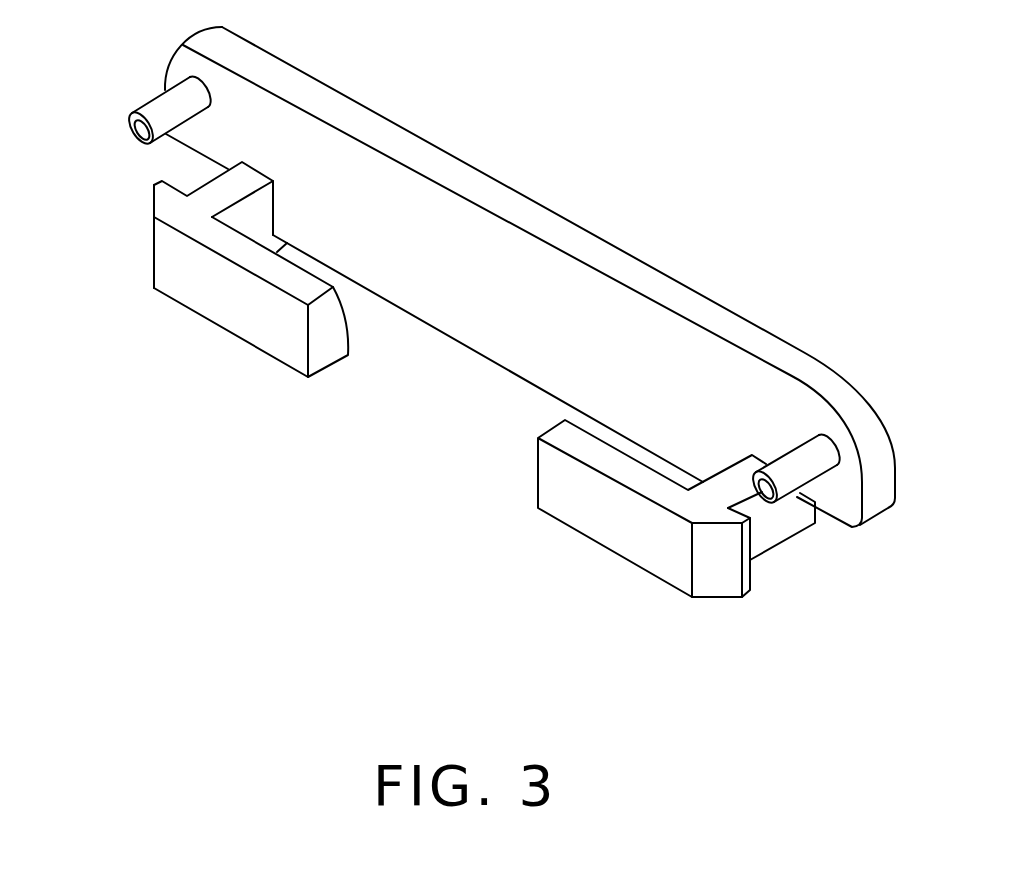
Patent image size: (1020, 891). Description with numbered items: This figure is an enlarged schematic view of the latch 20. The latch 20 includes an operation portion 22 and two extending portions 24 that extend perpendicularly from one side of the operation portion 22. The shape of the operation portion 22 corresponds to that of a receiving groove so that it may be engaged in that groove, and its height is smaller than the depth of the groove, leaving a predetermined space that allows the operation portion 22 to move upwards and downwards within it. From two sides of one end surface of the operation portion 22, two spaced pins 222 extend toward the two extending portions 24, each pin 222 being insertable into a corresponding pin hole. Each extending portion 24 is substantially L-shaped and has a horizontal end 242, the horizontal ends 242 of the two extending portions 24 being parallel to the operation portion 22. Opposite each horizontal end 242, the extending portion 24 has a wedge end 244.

The latch 20 is at (649, 236).
The operation portion 22 is at (260, 117).
The pin 222 is at (182, 102).
The extending portion 24 is at (228, 343).
The horizontal end 242 is at (607, 500).
The wedge end 244 is at (718, 567).